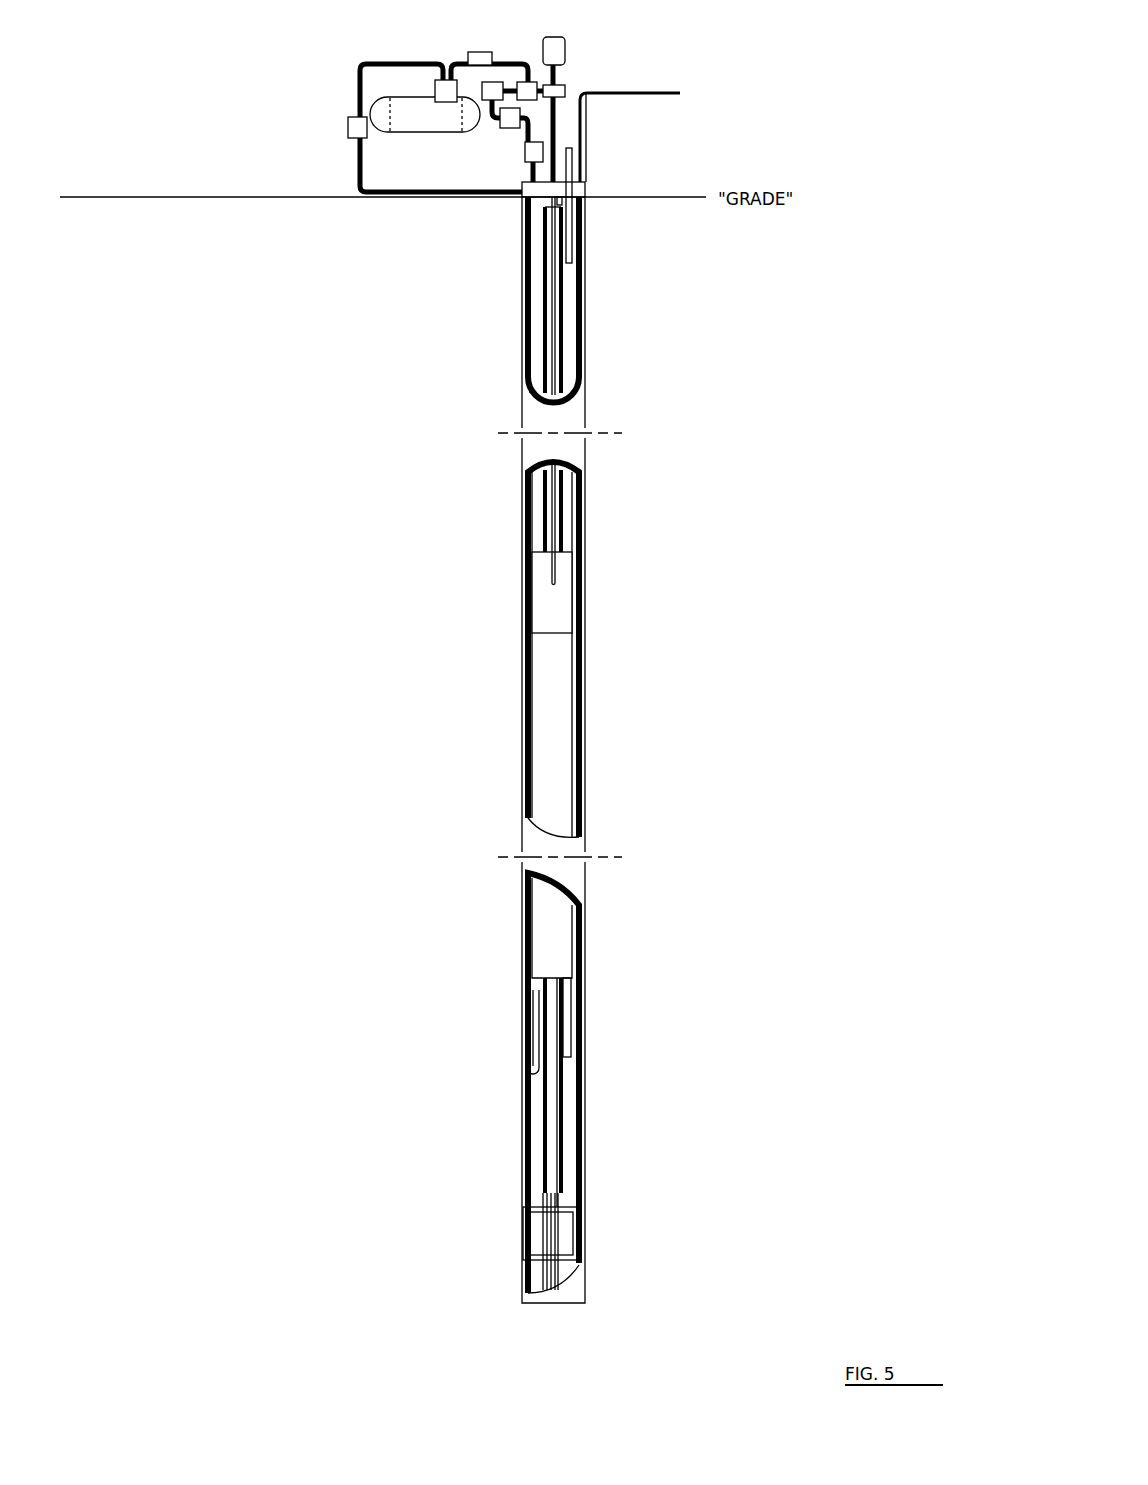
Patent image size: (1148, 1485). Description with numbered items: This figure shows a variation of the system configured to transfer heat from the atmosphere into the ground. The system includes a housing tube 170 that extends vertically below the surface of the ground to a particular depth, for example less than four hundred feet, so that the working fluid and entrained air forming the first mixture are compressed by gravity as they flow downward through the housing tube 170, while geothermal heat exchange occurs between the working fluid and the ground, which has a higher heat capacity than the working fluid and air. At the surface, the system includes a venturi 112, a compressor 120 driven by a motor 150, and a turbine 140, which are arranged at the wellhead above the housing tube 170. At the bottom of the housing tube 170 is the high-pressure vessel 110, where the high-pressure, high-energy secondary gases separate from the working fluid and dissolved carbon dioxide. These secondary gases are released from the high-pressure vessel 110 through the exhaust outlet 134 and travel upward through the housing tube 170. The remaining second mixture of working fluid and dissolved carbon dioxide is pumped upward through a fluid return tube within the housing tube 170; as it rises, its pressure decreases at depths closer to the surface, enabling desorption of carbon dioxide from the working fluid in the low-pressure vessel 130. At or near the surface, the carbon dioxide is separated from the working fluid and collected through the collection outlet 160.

The high-pressure vessel 110 is at (570, 1130).
The venturi 112 is at (572, 155).
The compressor 120 is at (546, 583).
The low-pressure vessel 130 is at (568, 307).
The exhaust outlet 134 is at (528, 288).
The turbine 140 is at (565, 88).
The motor 150 is at (553, 52).
The collection outlet 160 is at (360, 92).
The housing tube 170 is at (570, 413).